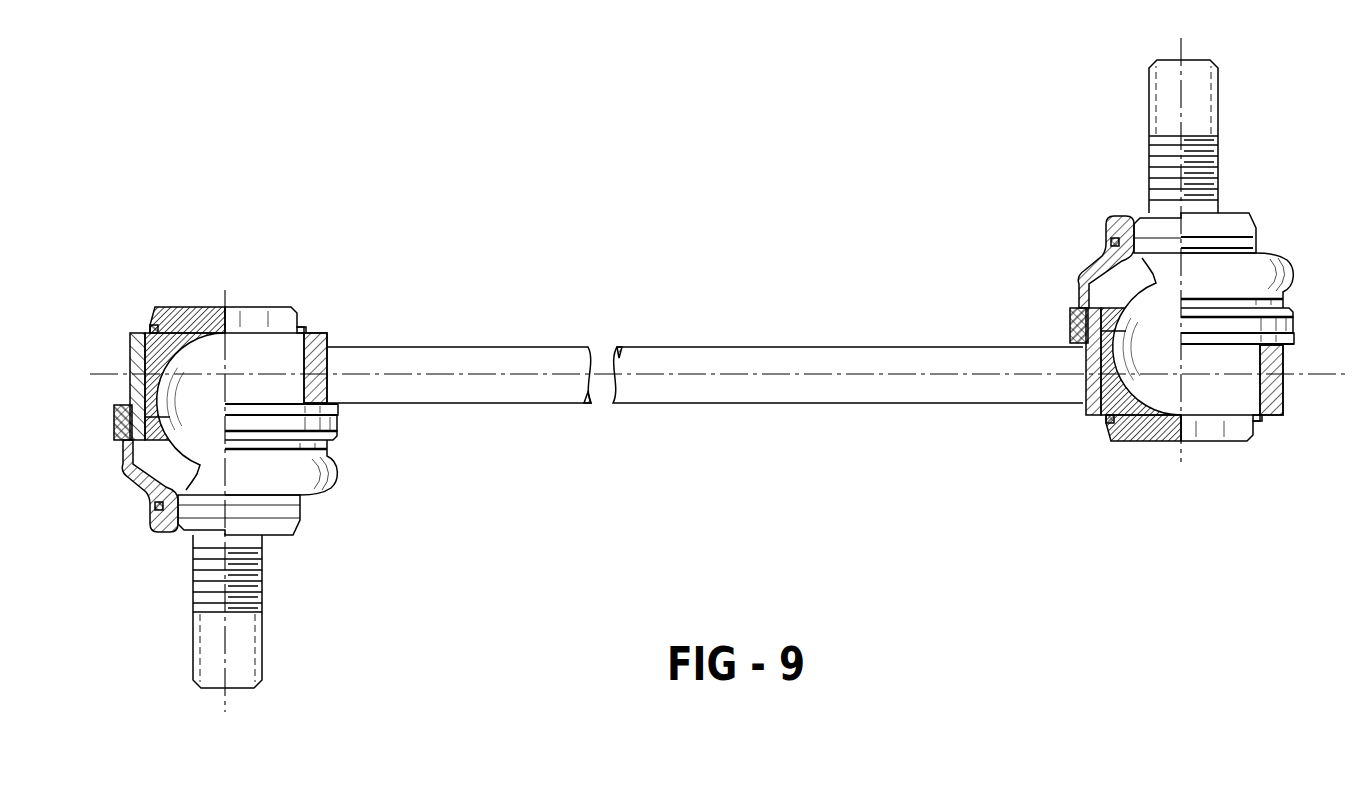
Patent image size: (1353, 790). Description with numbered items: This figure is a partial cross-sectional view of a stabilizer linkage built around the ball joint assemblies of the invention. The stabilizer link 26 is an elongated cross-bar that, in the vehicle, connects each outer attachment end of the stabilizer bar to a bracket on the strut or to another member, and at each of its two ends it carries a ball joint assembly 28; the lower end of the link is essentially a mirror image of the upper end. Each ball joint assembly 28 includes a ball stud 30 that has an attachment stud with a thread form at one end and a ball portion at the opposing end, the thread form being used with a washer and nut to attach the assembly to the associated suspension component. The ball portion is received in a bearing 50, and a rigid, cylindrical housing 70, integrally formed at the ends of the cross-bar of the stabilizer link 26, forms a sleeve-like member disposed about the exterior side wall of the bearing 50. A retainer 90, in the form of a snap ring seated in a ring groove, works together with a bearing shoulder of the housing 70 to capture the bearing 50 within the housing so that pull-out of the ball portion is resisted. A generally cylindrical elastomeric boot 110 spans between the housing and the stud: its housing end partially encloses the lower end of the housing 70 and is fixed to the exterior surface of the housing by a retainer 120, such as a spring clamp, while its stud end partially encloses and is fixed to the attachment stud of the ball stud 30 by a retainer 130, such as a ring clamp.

The stabilizer link 26 is at (464, 343).
The ball joint assembly 28 is at (294, 305).
The ball stud 30 is at (1221, 118).
The bearing 50 is at (307, 316).
The housing 70 is at (126, 361).
The retainer 90 is at (149, 322).
The elastomeric boot 110 is at (1293, 264).
The retainer 120 is at (117, 421).
The retainer 130 is at (151, 507).